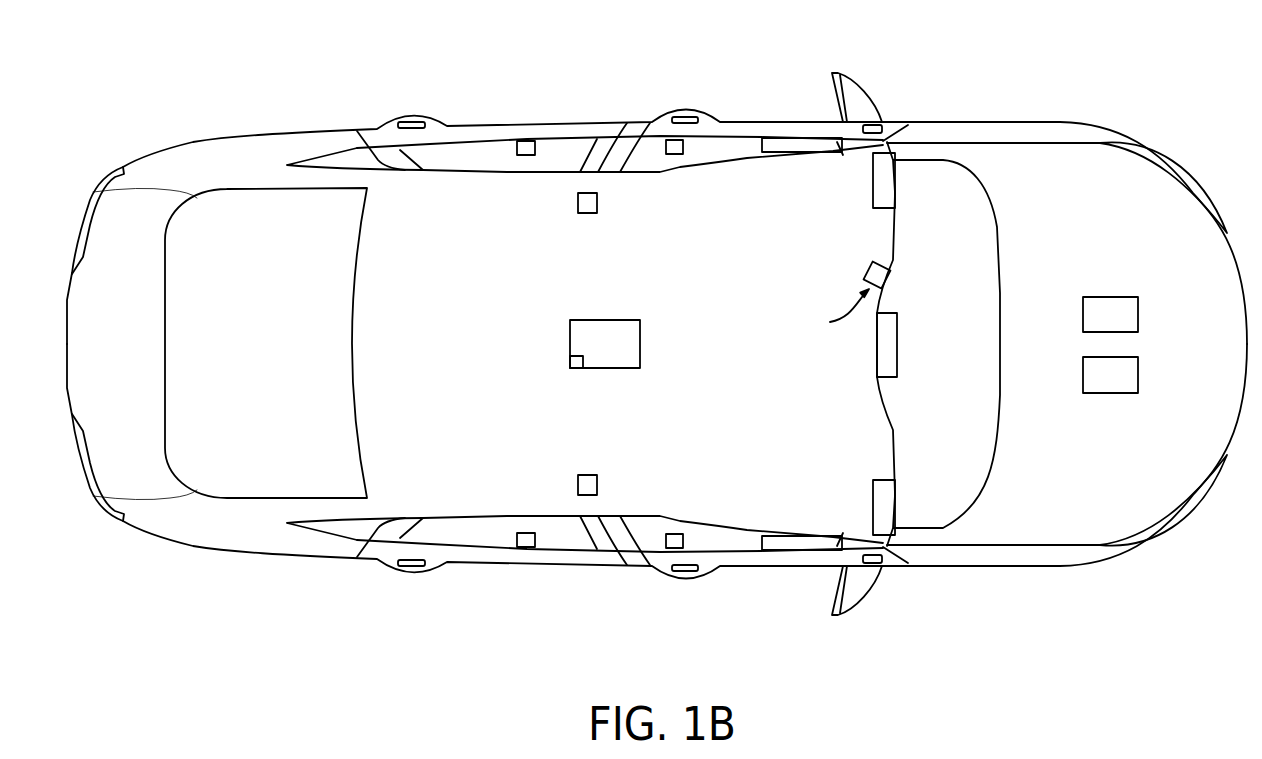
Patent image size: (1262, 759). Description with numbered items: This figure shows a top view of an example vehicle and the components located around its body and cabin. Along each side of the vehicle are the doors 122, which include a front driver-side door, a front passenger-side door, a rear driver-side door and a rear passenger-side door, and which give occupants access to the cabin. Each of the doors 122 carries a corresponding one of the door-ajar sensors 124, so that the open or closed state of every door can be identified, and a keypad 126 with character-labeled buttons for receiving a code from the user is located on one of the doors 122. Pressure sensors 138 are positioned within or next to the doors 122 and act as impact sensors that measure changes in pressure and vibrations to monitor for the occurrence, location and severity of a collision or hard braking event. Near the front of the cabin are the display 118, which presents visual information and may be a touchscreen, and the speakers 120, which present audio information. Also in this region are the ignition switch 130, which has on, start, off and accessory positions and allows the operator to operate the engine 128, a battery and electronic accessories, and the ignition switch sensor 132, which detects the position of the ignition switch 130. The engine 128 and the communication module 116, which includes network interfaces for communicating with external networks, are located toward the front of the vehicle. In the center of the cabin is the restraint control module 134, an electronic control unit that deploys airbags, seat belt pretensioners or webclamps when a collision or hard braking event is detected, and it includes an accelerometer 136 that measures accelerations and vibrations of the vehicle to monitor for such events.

The communication module 116 is at (1130, 326).
The display 118 is at (887, 343).
The speakers 120 is at (887, 187).
The doors 122 is at (468, 158).
The door-ajar sensors 124 is at (527, 142).
The keypad 126 is at (798, 147).
The engine 128 is at (1130, 386).
The ignition switch 130 is at (866, 272).
The ignition switch sensor 132 is at (828, 312).
The restraint control module 134 is at (625, 350).
The accelerometer 136 is at (577, 368).
The pressure sensors 138 is at (577, 203).